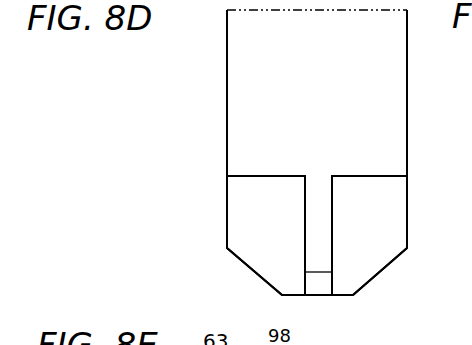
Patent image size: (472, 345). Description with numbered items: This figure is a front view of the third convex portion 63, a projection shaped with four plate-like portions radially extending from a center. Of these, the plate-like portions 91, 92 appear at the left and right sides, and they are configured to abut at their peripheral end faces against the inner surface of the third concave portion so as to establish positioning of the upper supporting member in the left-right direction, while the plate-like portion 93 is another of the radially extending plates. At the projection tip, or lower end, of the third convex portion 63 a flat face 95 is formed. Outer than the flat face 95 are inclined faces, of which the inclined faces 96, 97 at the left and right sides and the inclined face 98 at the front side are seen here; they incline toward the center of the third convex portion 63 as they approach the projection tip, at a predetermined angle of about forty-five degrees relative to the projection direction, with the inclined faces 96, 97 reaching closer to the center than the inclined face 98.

The third convex portion 63 is at (212, 68).
The plate-like portion 91 is at (232, 231).
The plate-like portion 92 is at (398, 231).
The plate-like portion 93 is at (318, 196).
The flat face 95 is at (343, 297).
The inclined face 96 is at (255, 278).
The inclined face 97 is at (383, 275).
The inclined face 98 is at (318, 288).